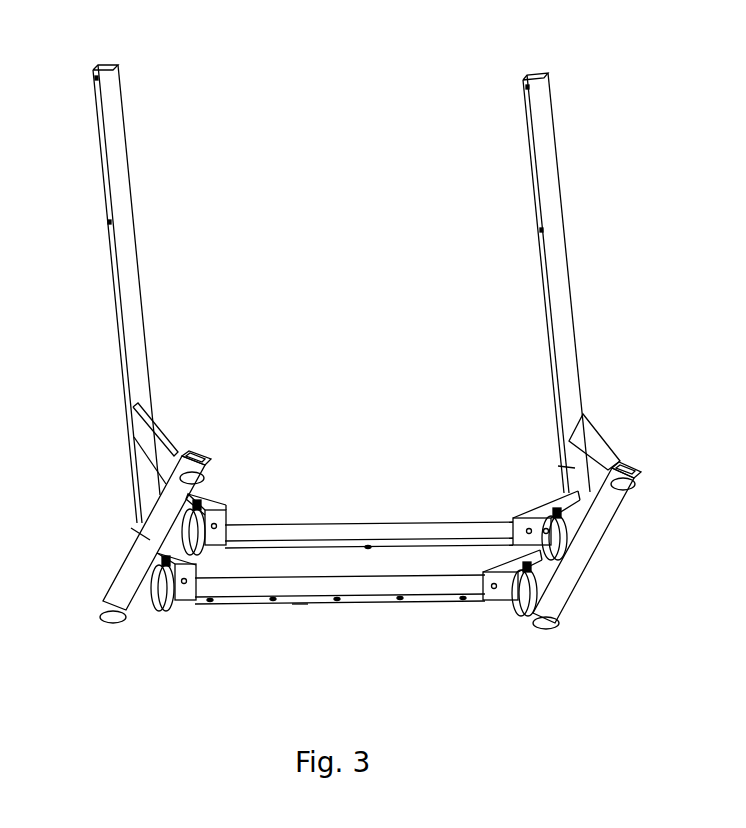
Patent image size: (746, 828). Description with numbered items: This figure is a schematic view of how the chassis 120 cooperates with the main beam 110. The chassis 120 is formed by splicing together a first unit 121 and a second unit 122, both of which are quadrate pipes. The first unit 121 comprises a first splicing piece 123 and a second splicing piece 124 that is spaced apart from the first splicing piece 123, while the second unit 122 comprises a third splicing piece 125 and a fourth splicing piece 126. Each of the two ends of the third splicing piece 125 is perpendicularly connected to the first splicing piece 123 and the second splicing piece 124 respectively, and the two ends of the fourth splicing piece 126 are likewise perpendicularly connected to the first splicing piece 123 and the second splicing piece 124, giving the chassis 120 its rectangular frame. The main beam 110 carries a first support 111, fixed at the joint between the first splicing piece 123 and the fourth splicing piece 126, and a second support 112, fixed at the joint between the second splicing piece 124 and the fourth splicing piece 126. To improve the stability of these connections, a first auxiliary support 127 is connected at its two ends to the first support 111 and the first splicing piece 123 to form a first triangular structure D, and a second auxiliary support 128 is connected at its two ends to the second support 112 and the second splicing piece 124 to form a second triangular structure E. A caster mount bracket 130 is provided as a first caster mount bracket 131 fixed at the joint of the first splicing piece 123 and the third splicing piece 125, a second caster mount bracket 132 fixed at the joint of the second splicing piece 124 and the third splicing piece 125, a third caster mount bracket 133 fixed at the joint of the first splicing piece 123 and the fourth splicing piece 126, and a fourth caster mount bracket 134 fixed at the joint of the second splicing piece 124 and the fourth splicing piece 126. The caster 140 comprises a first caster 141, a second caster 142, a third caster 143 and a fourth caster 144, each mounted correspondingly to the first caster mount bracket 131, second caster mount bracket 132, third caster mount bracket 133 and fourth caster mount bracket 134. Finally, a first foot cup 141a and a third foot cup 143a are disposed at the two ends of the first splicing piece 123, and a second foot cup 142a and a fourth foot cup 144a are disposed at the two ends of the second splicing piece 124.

The main beam 110 is at (355, 270).
The first support 111 is at (543, 130).
The second support 112 is at (118, 146).
The chassis 120 is at (363, 540).
The first unit 121 is at (120, 525).
The second unit 122 is at (300, 618).
The first splicing piece 123 is at (616, 563).
The second splicing piece 124 is at (145, 542).
The third splicing piece 125 is at (356, 606).
The fourth splicing piece 126 is at (355, 523).
The first auxiliary support 127 is at (595, 452).
The second auxiliary support 128 is at (152, 432).
The caster mount bracket 130 is at (534, 549).
The first caster mount bracket 131 is at (490, 580).
The second caster mount bracket 132 is at (190, 590).
The third caster mount bracket 133 is at (513, 517).
The fourth caster mount bracket 134 is at (222, 507).
The caster 140 is at (190, 585).
The first caster 141 is at (530, 605).
The first foot cup 141a is at (549, 627).
The second caster 142 is at (168, 603).
The second foot cup 142a is at (112, 624).
The third caster 143 is at (560, 548).
The third foot cup 143a is at (630, 485).
The fourth caster 144 is at (208, 553).
The fourth foot cup 144a is at (200, 478).
The second triangular structure E is at (140, 482).
The first triangular structure D is at (556, 468).